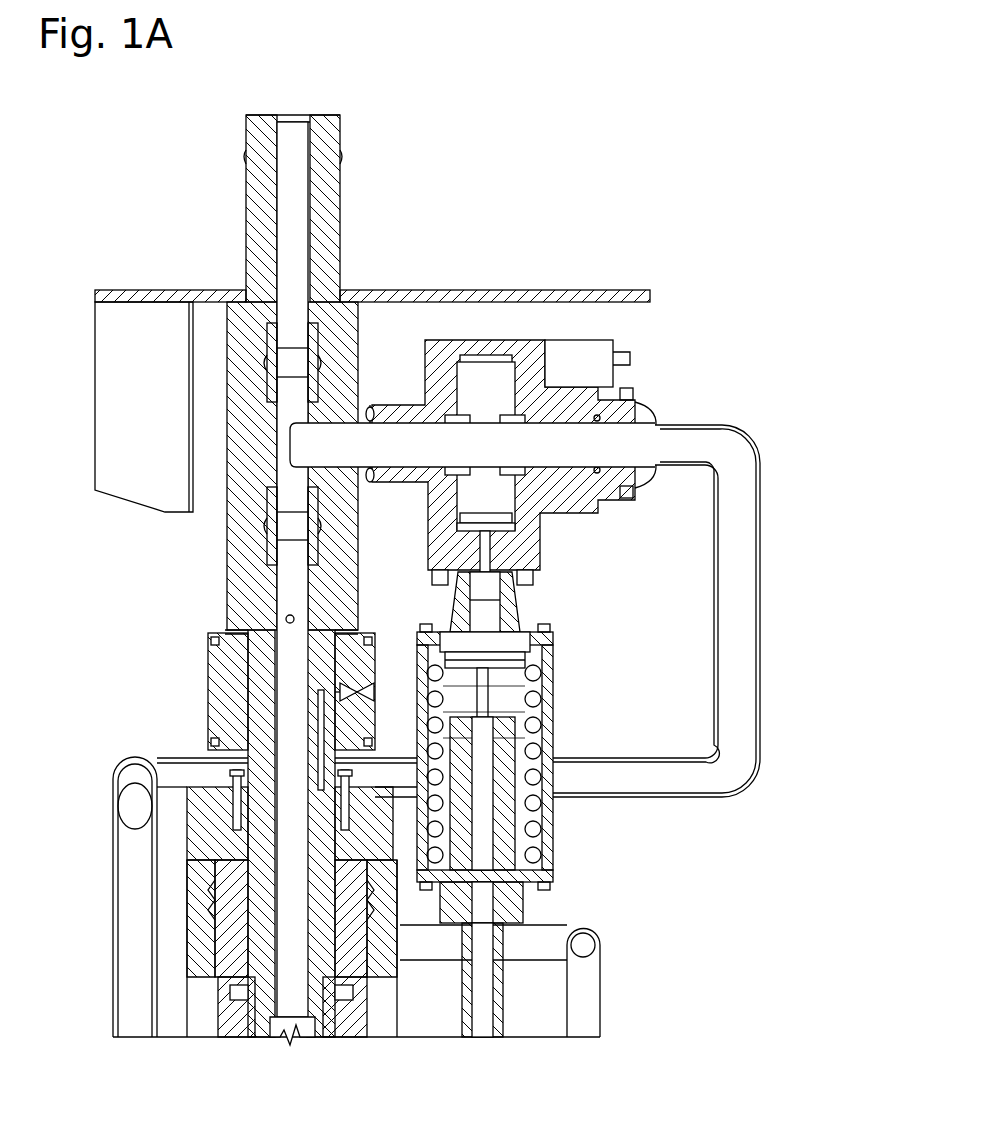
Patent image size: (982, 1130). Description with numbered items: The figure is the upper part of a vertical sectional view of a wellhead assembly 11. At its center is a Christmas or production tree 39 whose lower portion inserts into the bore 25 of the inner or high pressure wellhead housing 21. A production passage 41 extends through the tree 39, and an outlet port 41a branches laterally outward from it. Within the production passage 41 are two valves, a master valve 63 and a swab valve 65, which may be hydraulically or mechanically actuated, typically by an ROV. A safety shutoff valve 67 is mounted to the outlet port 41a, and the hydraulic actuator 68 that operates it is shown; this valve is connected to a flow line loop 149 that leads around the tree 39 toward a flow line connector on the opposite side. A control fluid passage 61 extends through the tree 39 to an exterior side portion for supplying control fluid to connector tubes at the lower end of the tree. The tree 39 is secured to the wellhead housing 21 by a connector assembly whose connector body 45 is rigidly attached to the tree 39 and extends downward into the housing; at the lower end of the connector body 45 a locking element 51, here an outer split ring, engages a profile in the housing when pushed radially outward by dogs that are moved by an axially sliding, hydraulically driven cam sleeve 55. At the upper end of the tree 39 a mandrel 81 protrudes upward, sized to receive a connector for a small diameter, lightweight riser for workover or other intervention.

The wellhead assembly 11 is at (135, 718).
The mandrel 81 is at (340, 130).
The production tree 39 is at (248, 565).
The production passage 41 is at (285, 598).
The outlet port 41a is at (350, 440).
The swab valve 65 is at (262, 366).
The master valve 63 is at (262, 530).
The safety shutoff valve 67 is at (648, 408).
The flow line loop 149 is at (763, 547).
The hydraulic actuator 68 is at (556, 690).
The control fluid passage 61 is at (312, 712).
The connector body 45 is at (200, 853).
The cam sleeve 55 is at (230, 878).
The bore 25 is at (225, 957).
The locking element 51 is at (220, 990).
The inner wellhead housing 21 is at (373, 1020).